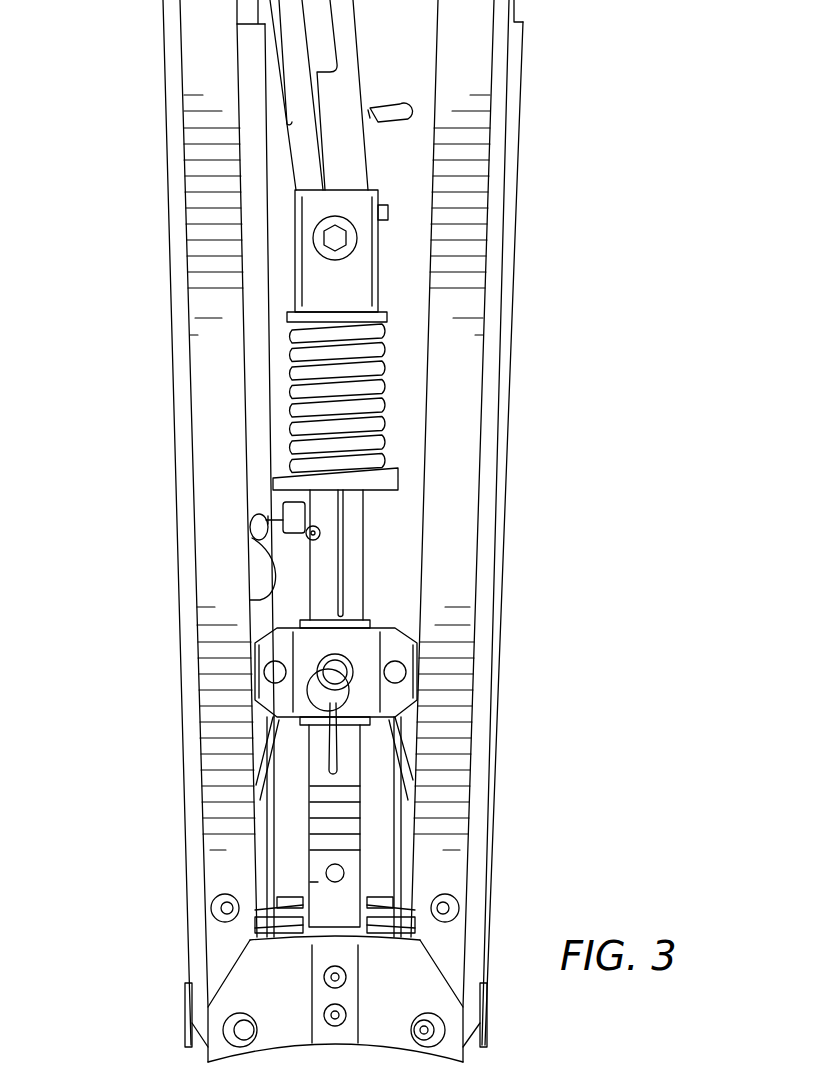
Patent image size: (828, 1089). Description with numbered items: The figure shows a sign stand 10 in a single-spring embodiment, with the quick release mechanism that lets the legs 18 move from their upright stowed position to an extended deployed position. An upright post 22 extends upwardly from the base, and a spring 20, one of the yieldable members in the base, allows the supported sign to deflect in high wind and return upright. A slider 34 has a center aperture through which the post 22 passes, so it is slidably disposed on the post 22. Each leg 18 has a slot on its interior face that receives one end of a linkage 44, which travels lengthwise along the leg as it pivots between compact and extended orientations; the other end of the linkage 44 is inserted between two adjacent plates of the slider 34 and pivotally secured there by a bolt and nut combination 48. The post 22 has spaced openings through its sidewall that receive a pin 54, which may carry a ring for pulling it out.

The stand 10 is at (575, 532).
The legs 18 is at (458, 490).
The springs 20 is at (377, 367).
The upright post 22 is at (350, 820).
The slider 34 is at (412, 633).
The linkage 44 is at (258, 723).
The bolt and nut combination 48 is at (402, 672).
The pin 54 is at (330, 668).